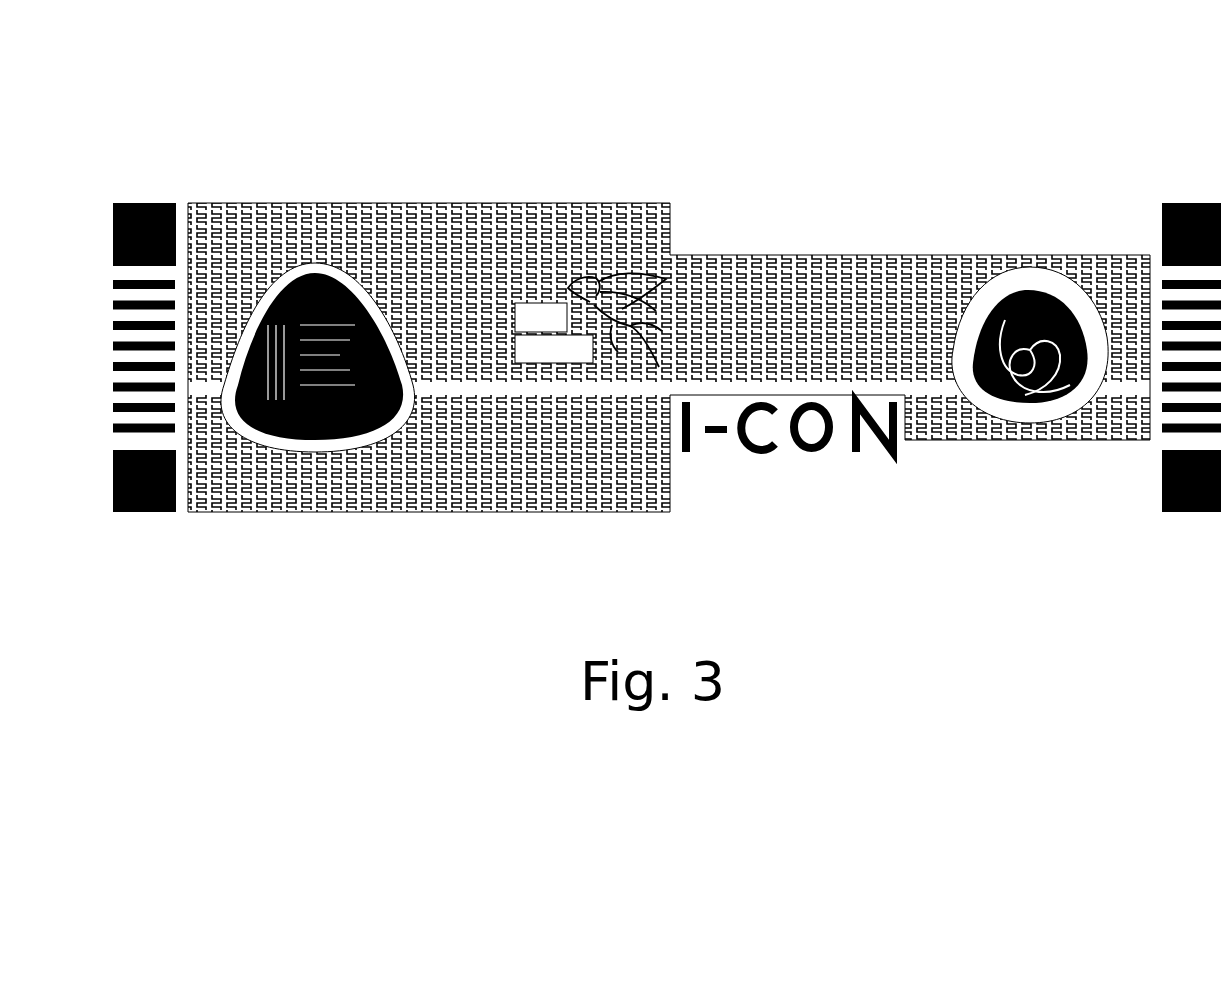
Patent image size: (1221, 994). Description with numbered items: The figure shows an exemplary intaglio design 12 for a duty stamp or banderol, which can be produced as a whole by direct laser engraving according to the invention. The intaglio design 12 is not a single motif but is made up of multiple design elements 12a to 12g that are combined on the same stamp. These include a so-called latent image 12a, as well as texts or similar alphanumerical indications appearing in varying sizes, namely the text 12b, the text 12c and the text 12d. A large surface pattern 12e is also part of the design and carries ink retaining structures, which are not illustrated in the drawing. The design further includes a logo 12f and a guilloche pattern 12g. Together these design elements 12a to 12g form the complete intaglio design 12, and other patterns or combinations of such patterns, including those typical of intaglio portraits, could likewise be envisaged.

The intaglio design 12 is at (360, 184).
The latent image 12a is at (314, 425).
The text in varying size 12b is at (792, 468).
The text in varying size 12c is at (1036, 480).
The text in varying size 12d is at (884, 234).
The large surface pattern 12e is at (1033, 290).
The logo 12f is at (560, 277).
The guilloche pattern 12g is at (597, 498).